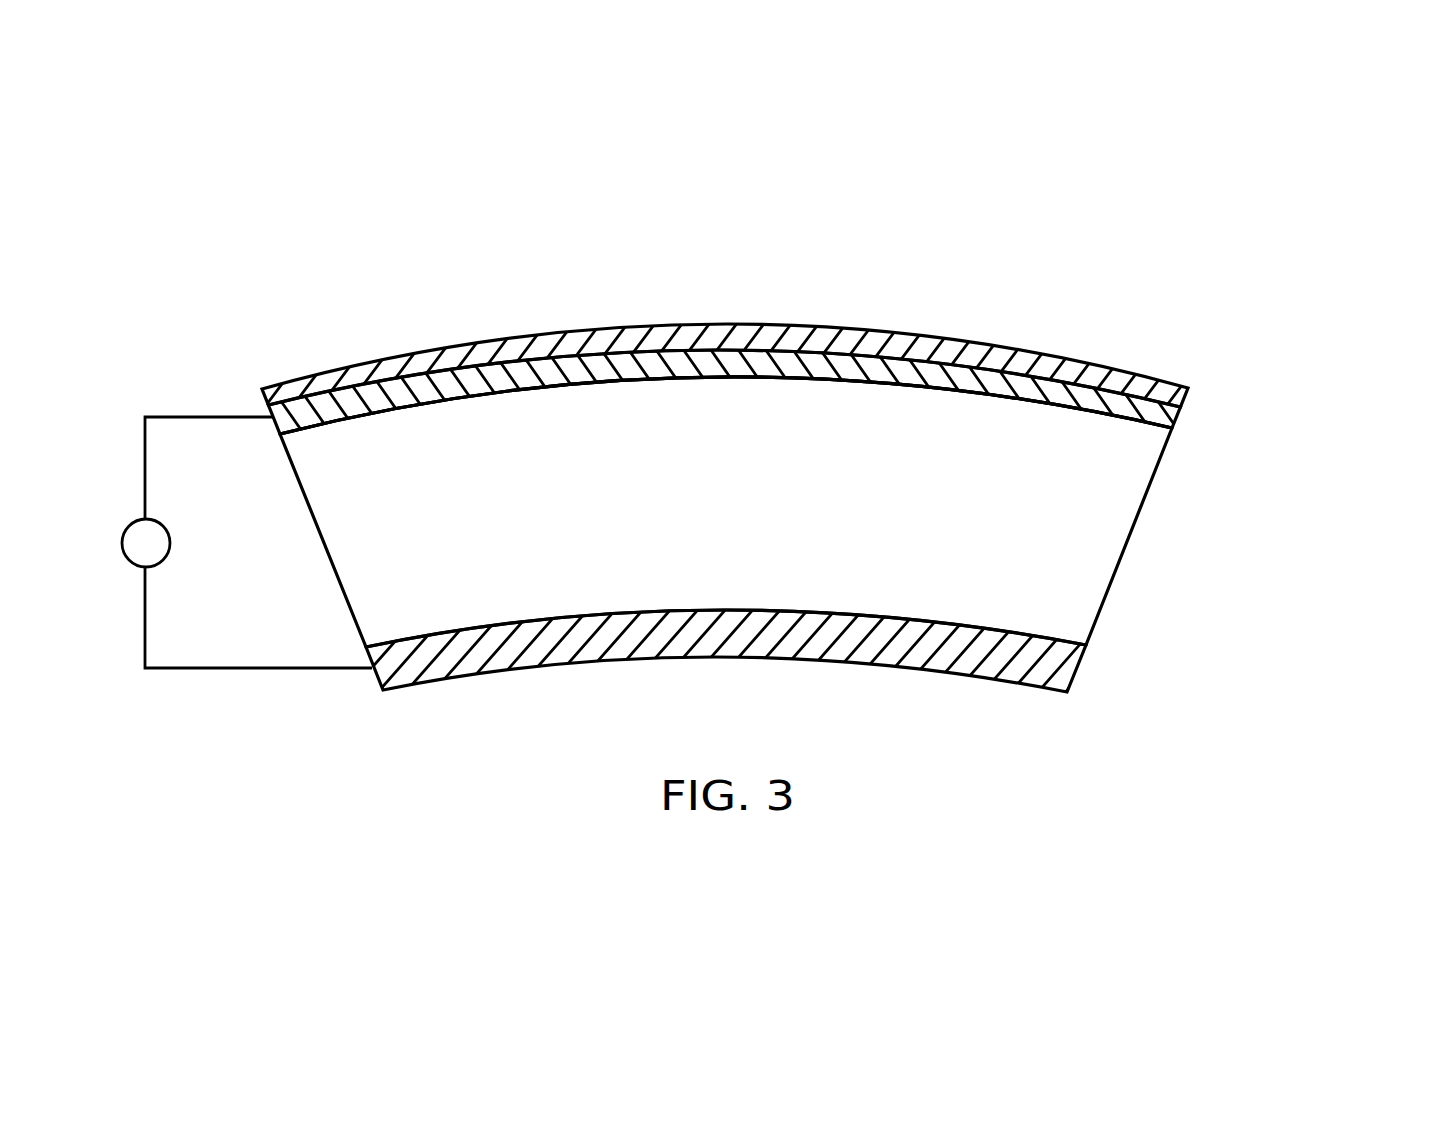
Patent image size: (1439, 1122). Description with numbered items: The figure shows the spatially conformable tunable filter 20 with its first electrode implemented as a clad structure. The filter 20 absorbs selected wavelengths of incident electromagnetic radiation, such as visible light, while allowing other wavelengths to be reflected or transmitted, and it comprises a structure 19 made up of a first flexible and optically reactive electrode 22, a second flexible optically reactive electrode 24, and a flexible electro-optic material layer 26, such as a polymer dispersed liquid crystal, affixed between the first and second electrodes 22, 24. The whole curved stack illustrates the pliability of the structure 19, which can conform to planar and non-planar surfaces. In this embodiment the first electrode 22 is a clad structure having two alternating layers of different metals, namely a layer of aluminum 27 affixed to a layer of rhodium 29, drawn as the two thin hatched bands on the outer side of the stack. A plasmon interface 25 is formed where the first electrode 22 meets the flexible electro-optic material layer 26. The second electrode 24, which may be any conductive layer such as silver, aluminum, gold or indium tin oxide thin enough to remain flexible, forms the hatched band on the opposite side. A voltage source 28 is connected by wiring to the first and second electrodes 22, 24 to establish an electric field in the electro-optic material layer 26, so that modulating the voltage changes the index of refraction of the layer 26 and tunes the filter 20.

The structure 19 is at (1348, 368).
The spatially conformable tunable filter 20 is at (1000, 257).
The first flexible and optically reactive electrode 22 is at (1270, 383).
The second flexible optically reactive electrode 24 is at (1063, 667).
The plasmon interface 25 is at (1012, 397).
The flexible electro-optic material layer 26 is at (1130, 473).
The layer of aluminum 27 is at (1182, 398).
The voltage source 28 is at (170, 534).
The layer of rhodium 29 is at (1173, 425).